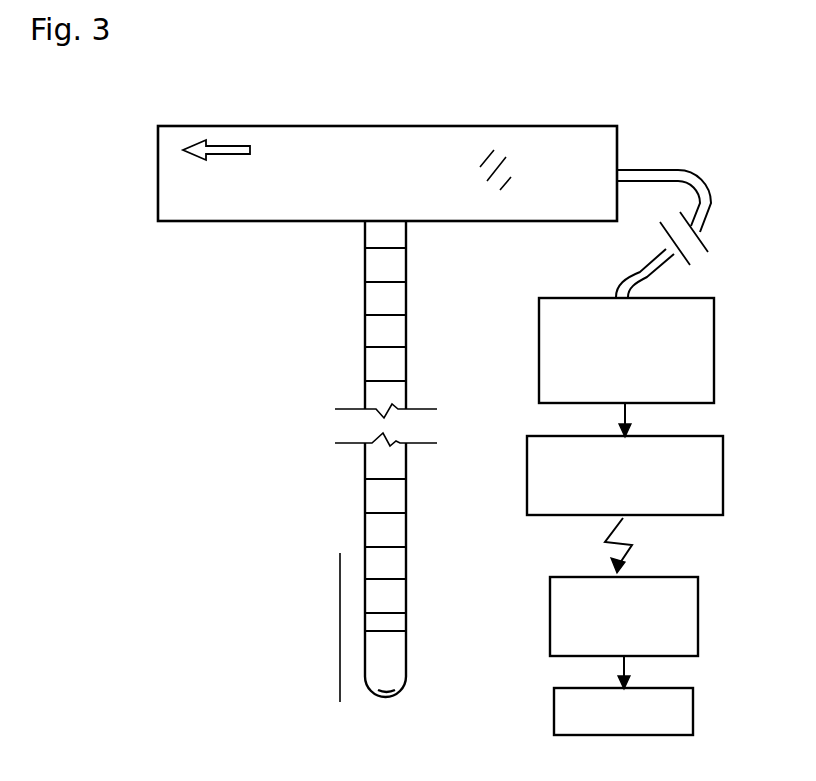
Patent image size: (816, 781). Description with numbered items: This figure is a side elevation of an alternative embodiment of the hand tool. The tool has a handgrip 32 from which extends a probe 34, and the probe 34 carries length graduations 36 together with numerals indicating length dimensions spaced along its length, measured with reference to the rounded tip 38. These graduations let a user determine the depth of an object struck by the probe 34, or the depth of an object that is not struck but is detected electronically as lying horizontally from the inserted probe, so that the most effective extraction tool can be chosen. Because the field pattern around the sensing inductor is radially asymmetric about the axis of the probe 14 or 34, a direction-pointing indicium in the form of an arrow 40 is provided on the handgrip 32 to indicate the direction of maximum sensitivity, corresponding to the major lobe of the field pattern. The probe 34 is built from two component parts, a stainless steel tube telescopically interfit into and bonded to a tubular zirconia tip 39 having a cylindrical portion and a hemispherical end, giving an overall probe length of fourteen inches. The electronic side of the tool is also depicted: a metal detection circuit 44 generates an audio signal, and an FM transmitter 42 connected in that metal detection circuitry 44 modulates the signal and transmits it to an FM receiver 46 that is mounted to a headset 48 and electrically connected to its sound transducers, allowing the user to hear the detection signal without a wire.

The probe 14 is at (418, 697).
The handgrip 32 is at (262, 213).
The probe 34 is at (405, 287).
The length graduations 36 is at (377, 297).
The rounded tip 38 is at (385, 688).
The zirconia tip 39 is at (396, 651).
The arrow 40 is at (232, 146).
The FM transmitter 42 is at (723, 477).
The metal detection circuitry 44 is at (714, 345).
The FM receiver 46 is at (698, 618).
The headset 48 is at (693, 711).